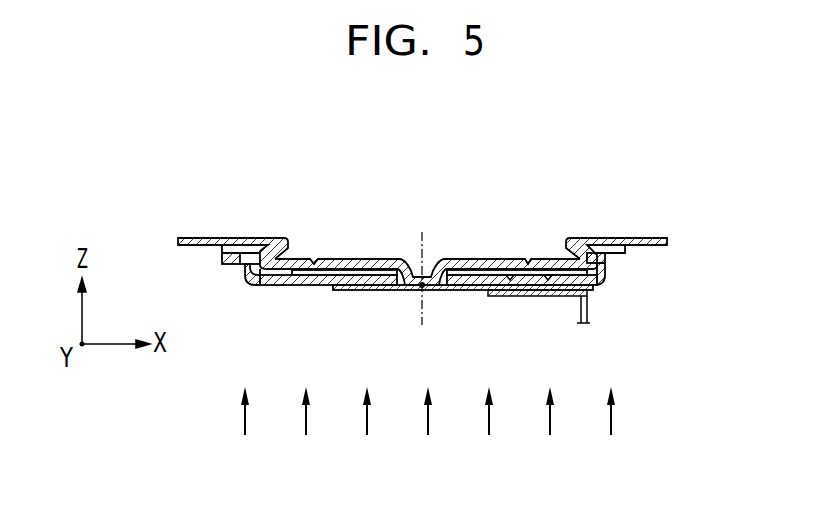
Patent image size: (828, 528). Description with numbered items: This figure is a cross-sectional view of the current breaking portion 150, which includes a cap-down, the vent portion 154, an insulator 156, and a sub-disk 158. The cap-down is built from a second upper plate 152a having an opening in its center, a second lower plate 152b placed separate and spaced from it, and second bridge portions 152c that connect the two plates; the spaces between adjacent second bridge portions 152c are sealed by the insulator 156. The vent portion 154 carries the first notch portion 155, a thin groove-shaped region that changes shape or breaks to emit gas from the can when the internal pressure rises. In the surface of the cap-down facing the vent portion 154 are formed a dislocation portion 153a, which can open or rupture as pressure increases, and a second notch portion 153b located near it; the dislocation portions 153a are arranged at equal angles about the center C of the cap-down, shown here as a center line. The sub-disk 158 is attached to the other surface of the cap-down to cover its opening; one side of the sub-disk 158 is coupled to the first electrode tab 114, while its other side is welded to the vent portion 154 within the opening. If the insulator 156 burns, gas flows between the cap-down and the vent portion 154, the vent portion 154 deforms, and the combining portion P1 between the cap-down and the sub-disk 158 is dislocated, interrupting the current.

The current breaking portion 150 is at (207, 183).
The vent portion 154 is at (655, 238).
The first notch portion 155 is at (314, 261).
The insulator 156 is at (613, 252).
The second upper plate 152a is at (605, 263).
The second lower plate 152b is at (472, 281).
The second bridge portion 152c is at (601, 281).
The dislocation portion 153a is at (530, 284).
The second notch portion 153b is at (511, 275).
The sub-disk 158 is at (398, 290).
The first electrode tab 114 is at (586, 306).
The combining portion P1 is at (424, 287).
The center C is at (423, 264).